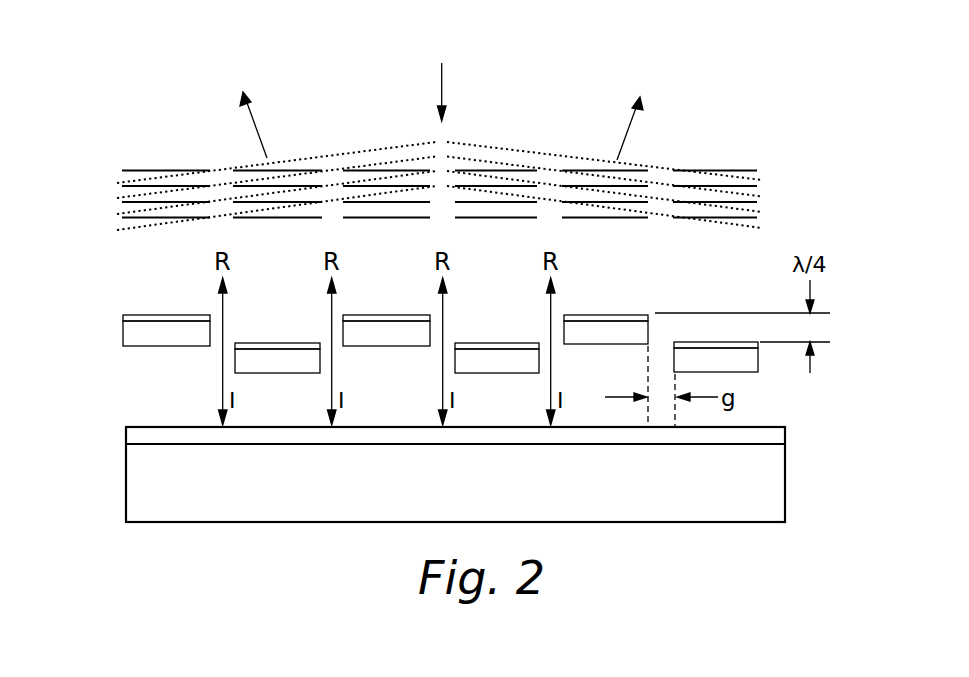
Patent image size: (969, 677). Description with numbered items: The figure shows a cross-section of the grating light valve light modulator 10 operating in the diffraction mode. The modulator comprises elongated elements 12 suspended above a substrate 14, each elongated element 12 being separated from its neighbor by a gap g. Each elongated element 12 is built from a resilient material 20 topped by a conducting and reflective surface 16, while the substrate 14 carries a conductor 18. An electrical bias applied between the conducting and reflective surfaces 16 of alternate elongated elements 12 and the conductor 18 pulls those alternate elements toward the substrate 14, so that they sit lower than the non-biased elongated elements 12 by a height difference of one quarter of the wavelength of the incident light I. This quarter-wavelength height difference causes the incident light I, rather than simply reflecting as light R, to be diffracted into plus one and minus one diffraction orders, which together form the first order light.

The grating light valve light modulator 10 is at (720, 108).
The elongated elements 12 is at (160, 354).
The substrate 14 is at (488, 493).
The conducting and reflective surface 16 is at (123, 319).
The conductor 18 is at (785, 427).
The resilient material 20 is at (123, 333).